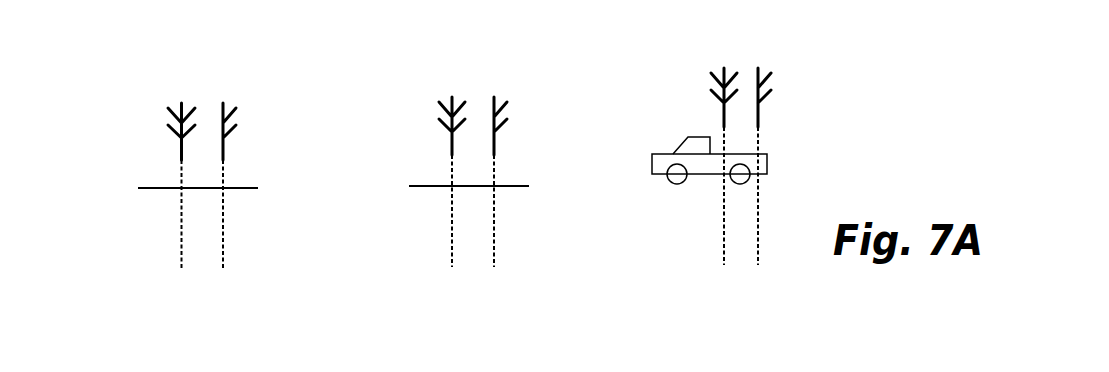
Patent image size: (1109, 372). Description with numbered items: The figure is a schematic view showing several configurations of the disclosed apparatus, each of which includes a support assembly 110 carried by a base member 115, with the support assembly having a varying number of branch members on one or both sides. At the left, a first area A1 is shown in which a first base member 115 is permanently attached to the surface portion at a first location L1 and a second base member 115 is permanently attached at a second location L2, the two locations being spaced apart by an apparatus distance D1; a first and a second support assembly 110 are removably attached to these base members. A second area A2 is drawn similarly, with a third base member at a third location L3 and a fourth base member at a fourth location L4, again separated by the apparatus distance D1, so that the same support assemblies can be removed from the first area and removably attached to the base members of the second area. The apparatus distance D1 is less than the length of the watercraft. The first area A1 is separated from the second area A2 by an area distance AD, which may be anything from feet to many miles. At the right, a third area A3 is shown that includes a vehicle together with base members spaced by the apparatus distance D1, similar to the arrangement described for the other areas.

The support assembly 110 is at (148, 98).
The base member 115 is at (180, 187).
The first area A1 is at (208, 172).
The second area A2 is at (480, 163).
The third area A3 is at (746, 54).
The first location L1 is at (170, 202).
The second location L2 is at (236, 204).
The third location L3 is at (440, 199).
The fourth location L4 is at (507, 201).
The apparatus distance D1 is at (222, 236).
The area distance AD is at (451, 257).